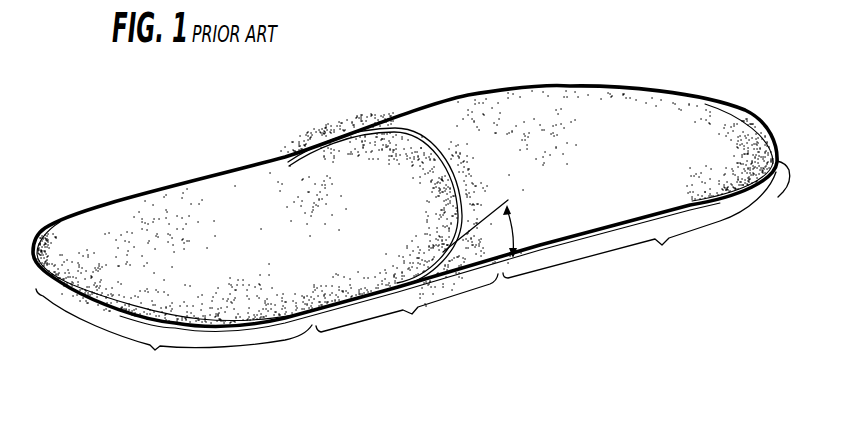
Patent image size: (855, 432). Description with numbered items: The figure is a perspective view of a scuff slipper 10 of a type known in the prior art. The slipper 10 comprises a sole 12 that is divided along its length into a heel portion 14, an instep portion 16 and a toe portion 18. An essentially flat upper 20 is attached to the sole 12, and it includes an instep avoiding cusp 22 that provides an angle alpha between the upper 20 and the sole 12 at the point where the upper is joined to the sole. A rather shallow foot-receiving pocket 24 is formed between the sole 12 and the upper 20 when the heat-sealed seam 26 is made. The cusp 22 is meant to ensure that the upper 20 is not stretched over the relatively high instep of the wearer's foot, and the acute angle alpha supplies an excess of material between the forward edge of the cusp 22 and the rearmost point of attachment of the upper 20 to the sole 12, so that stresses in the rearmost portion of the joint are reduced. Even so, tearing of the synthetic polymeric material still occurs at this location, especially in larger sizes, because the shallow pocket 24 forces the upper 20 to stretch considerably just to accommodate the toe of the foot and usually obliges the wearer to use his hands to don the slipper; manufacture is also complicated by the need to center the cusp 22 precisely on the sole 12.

The slipper 10 is at (467, 84).
The sole 12 is at (261, 267).
The heel portion 14 is at (174, 337).
The instep portion 16 is at (407, 305).
The toe portion 18 is at (639, 225).
The upper 20 is at (631, 150).
The instep avoiding cusp 22 is at (390, 131).
The foot-receiving pocket 24 is at (406, 191).
The heat-sealed seam 26 is at (792, 185).